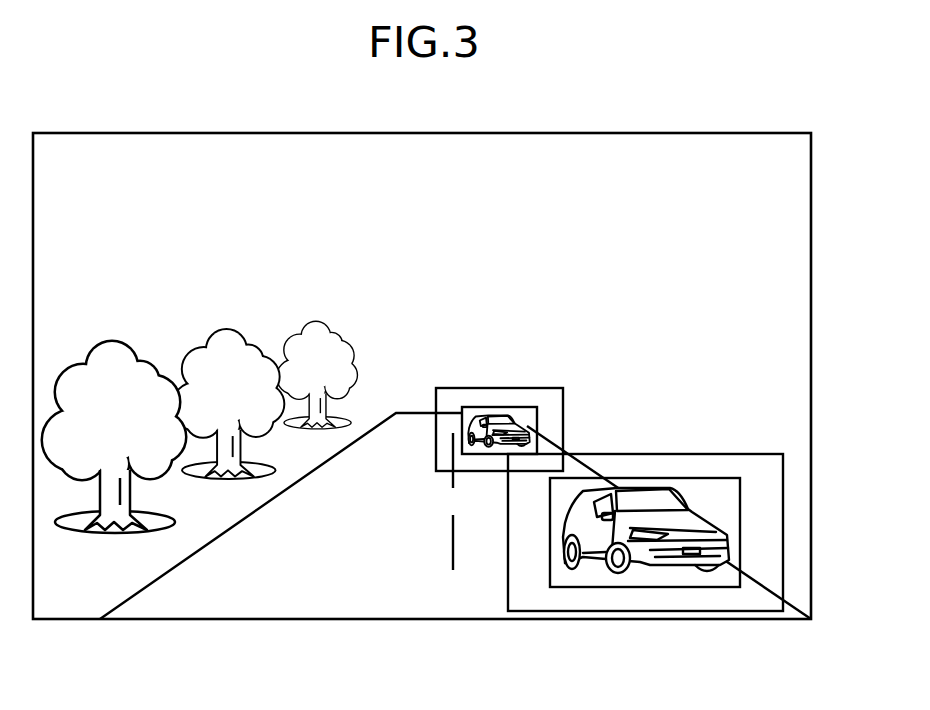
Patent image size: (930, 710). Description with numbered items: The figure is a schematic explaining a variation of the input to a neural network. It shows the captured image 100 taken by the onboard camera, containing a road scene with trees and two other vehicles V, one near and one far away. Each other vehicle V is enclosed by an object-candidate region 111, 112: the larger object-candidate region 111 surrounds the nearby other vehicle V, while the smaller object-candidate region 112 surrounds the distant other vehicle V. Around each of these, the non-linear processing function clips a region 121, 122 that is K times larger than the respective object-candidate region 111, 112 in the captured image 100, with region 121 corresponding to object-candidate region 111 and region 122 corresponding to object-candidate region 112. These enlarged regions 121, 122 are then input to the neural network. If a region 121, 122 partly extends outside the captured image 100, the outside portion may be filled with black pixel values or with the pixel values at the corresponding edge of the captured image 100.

The captured image 100 is at (757, 134).
The object-candidate region 111 is at (647, 478).
The object-candidate region 112 is at (502, 406).
The region 121 is at (763, 453).
The region 122 is at (457, 387).
The other vehicle V is at (521, 416).